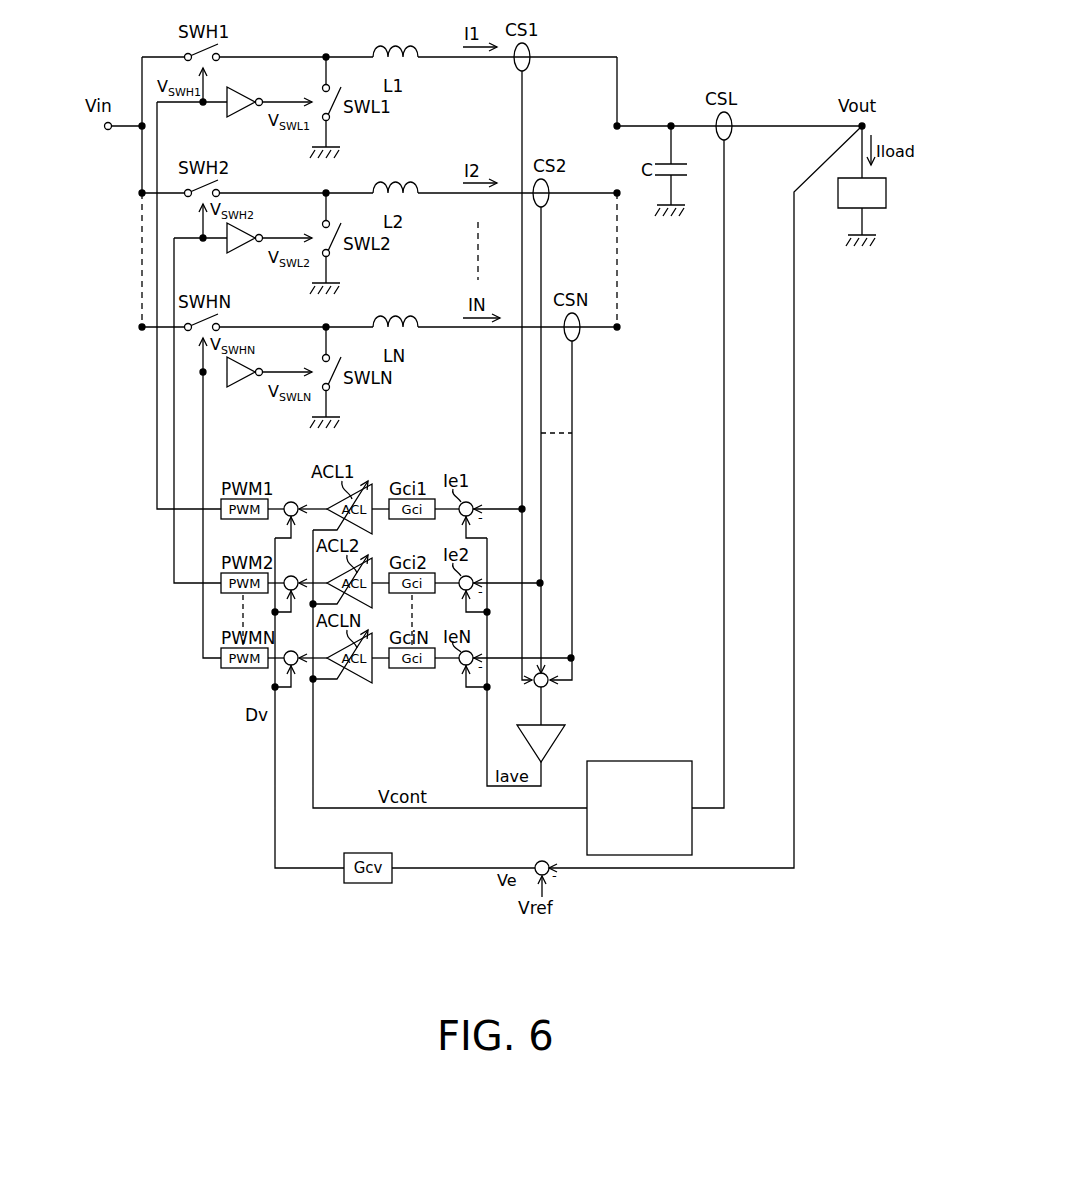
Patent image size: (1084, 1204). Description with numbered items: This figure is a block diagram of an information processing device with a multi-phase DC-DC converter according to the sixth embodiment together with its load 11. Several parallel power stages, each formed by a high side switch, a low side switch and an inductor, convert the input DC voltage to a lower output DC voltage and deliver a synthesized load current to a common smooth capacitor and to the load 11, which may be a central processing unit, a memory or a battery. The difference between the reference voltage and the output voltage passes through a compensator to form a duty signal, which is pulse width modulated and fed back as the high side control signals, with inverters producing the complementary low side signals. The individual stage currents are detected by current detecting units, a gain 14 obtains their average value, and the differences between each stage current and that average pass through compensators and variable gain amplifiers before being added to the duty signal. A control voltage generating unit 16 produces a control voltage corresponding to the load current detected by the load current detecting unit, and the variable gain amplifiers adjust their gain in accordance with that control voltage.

The load 11 is at (850, 210).
The gain 14 is at (565, 740).
The control voltage generating unit 16 is at (647, 761).